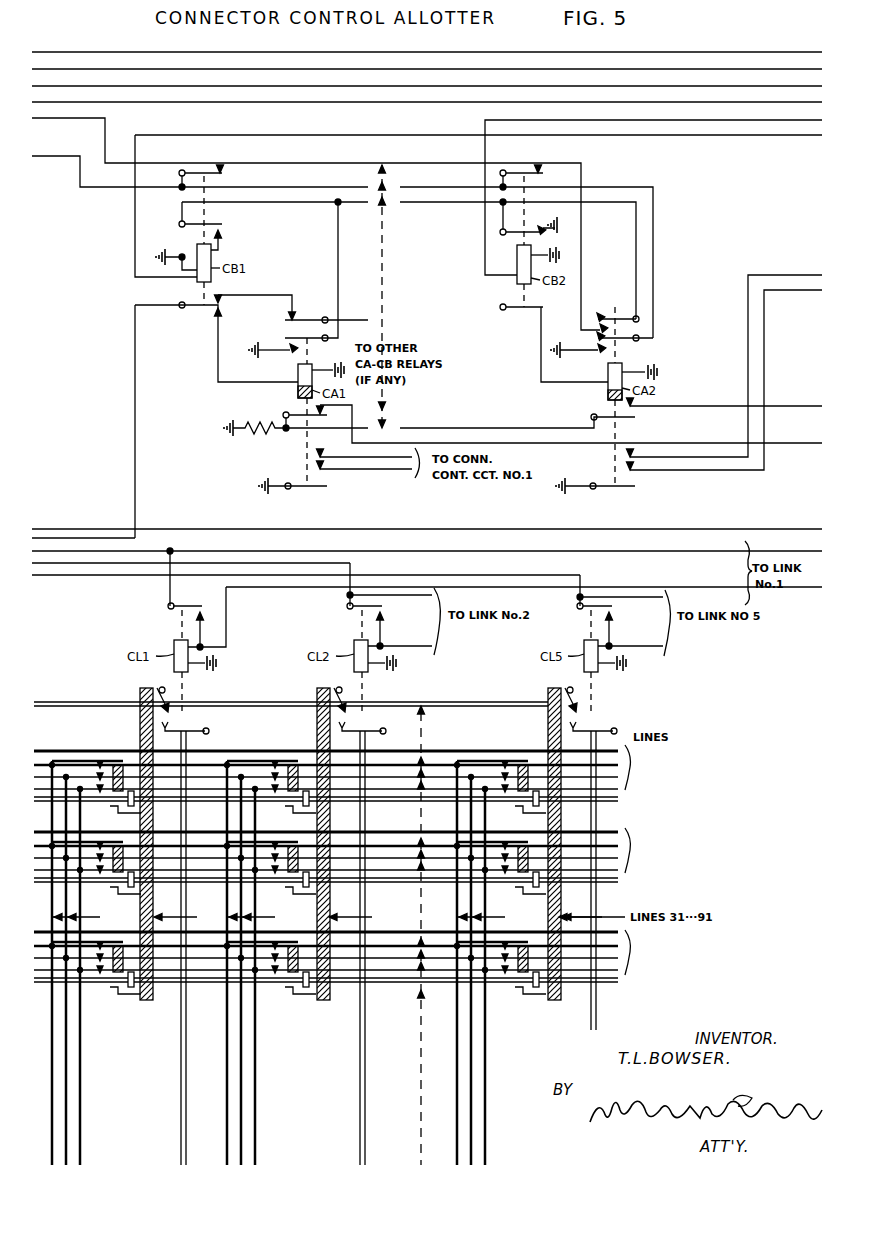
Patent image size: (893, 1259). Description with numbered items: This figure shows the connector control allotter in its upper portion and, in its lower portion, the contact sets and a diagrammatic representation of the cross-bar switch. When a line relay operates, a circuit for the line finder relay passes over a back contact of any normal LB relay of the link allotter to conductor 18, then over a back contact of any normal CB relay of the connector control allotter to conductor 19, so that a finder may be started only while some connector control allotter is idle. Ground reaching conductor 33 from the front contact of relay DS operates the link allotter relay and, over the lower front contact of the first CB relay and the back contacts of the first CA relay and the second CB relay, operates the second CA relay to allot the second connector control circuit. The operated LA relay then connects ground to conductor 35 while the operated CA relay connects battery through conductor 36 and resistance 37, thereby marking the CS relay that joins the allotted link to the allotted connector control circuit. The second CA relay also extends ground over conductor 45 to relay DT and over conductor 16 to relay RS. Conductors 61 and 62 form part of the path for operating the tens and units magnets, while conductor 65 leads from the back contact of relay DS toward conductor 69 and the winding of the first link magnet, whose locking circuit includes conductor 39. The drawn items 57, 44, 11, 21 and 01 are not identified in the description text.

The conductor 57 is at (40, 52).
The conductor 65 is at (38, 69).
The conductor 62 is at (38, 86).
The conductor 61 is at (38, 102).
The conductor 19 is at (36, 120).
The conductor 18 is at (36, 156).
The conductor 44 is at (778, 120).
The conductor 16 is at (783, 275).
The conductor 45 is at (780, 290).
The conductor 36 is at (783, 406).
The resistance 37 is at (258, 434).
The conductor 33 is at (42, 538).
The conductor 35 is at (80, 529).
The conductor 39 is at (142, 551).
The conductor 69 is at (768, 587).
The line 11 is at (642, 767).
The line 21 is at (642, 850).
The line 01 is at (642, 952).